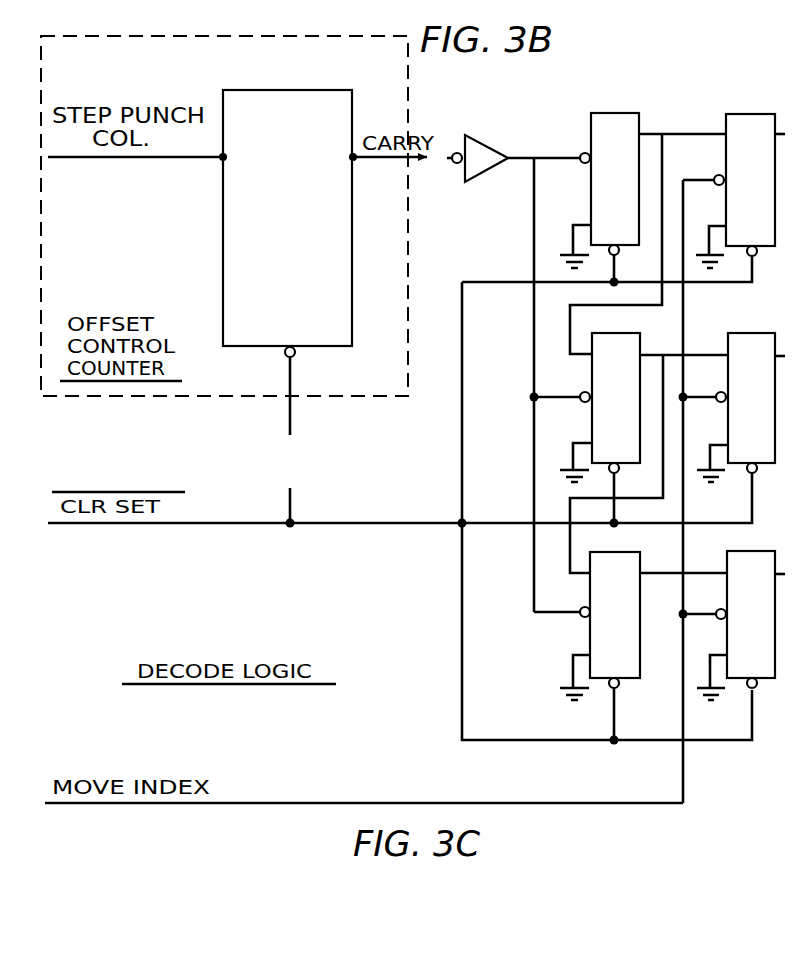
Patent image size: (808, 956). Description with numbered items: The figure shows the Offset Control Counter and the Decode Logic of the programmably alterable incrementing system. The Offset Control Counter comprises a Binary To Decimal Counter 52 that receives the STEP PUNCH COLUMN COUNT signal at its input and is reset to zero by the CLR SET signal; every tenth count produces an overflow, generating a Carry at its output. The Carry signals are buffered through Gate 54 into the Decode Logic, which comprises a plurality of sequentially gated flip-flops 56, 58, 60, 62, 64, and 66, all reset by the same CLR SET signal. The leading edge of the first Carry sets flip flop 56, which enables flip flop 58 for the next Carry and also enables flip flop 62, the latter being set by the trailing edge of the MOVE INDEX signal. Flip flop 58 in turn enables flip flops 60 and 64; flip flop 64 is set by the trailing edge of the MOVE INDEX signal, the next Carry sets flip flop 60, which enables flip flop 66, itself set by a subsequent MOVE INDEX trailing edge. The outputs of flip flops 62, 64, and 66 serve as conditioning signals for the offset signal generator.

In FIG. 3B, the binary to decimal counter 52 is at (296, 90).
In FIG. 3C, the gate 54 is at (493, 150).
In FIG. 3C, the flip flop 56 is at (630, 205).
In FIG. 3C, the flip flop 58 is at (631, 440).
In FIG. 3C, the flip flop 60 is at (630, 656).
In FIG. 3C, the flip flop 62 is at (765, 215).
In FIG. 3C, the flip flop 64 is at (766, 440).
In FIG. 3C, the flip flop 66 is at (766, 656).